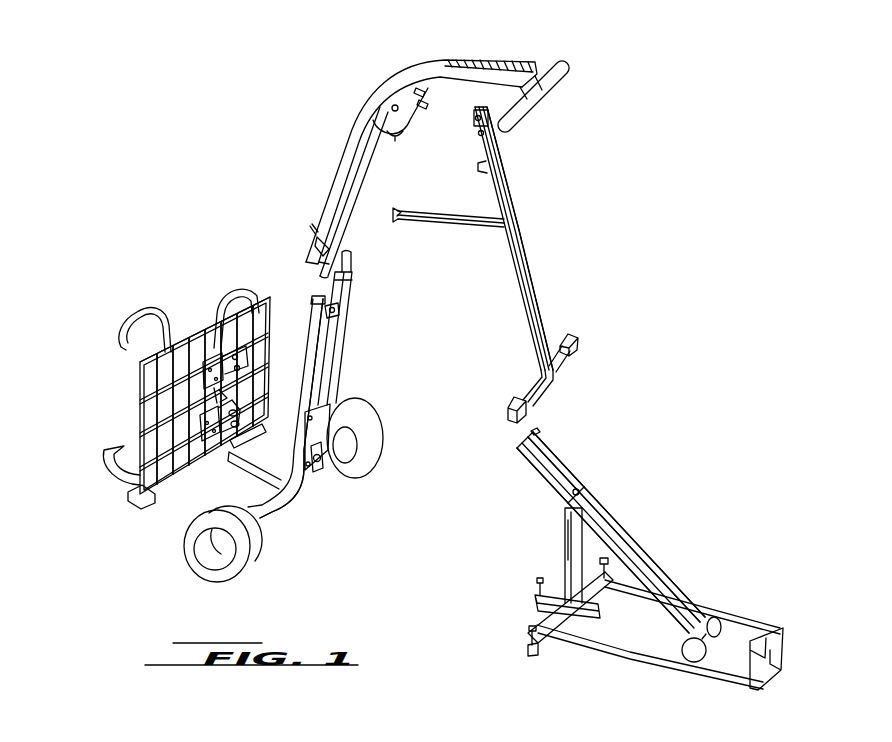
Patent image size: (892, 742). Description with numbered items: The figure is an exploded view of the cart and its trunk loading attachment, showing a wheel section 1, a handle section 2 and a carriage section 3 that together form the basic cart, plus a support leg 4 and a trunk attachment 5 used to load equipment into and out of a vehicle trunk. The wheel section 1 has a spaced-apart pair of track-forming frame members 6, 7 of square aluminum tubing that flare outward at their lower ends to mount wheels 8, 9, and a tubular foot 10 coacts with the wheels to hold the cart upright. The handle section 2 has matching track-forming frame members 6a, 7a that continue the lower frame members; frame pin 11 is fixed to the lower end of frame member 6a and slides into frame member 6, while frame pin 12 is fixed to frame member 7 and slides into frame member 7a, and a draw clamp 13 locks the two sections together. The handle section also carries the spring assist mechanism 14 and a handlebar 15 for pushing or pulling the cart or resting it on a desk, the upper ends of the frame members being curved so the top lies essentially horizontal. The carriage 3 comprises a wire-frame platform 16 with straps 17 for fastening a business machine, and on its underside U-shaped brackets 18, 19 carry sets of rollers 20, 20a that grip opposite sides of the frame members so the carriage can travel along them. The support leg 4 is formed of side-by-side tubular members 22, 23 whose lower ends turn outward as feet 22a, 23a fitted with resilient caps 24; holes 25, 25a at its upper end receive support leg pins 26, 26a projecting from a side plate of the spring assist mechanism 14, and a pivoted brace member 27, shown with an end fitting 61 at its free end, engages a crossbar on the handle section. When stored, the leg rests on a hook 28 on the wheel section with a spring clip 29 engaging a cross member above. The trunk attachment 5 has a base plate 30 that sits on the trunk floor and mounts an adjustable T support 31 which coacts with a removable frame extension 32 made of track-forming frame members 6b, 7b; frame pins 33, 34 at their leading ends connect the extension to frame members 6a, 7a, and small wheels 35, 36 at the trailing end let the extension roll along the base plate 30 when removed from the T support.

The wheel section 1 is at (353, 352).
The handle section 2 is at (378, 85).
The carriage section 3 is at (166, 308).
The support leg 4 is at (527, 232).
The trunk attachment 5 is at (747, 610).
The frame member 6 is at (311, 320).
The frame member 6a is at (350, 155).
The frame member 6b is at (525, 462).
The frame member 7 is at (343, 322).
The frame member 7a is at (370, 157).
The frame member 7b is at (570, 466).
The wheel 8 is at (258, 550).
The wheel 9 is at (383, 437).
The foot 10 is at (258, 481).
The frame pin 11 is at (316, 267).
The frame pin 12 is at (353, 261).
The draw clamp 13 is at (315, 240).
The spring assist mechanism 14 is at (398, 141).
The handlebar 15 is at (541, 104).
The platform 16 is at (135, 372).
The straps 17 is at (118, 318).
The U-shaped bracket 18 is at (203, 362).
The U-shaped bracket 19 is at (205, 442).
The rollers 20 is at (216, 357).
The rollers 20a is at (249, 340).
The tubular member 22 is at (520, 278).
The foot 22a is at (541, 402).
The tubular member 23 is at (525, 284).
The foot 23a is at (563, 366).
The resilient cap 24 is at (578, 336).
The hole 25 is at (474, 118).
The hole 25a is at (478, 135).
The support leg pin 26 is at (422, 92).
The support leg pin 26a is at (428, 101).
The brace member 27 is at (438, 211).
The hook 28 is at (320, 473).
The spring clip 29 is at (488, 167).
The base plate 30 is at (618, 654).
The T support 31 is at (564, 515).
The frame extension 32 is at (660, 532).
The frame pin 33 is at (518, 442).
The frame pin 34 is at (538, 433).
The small wheel 35 is at (696, 662).
The small wheel 36 is at (716, 616).
The hook 61 is at (397, 216).